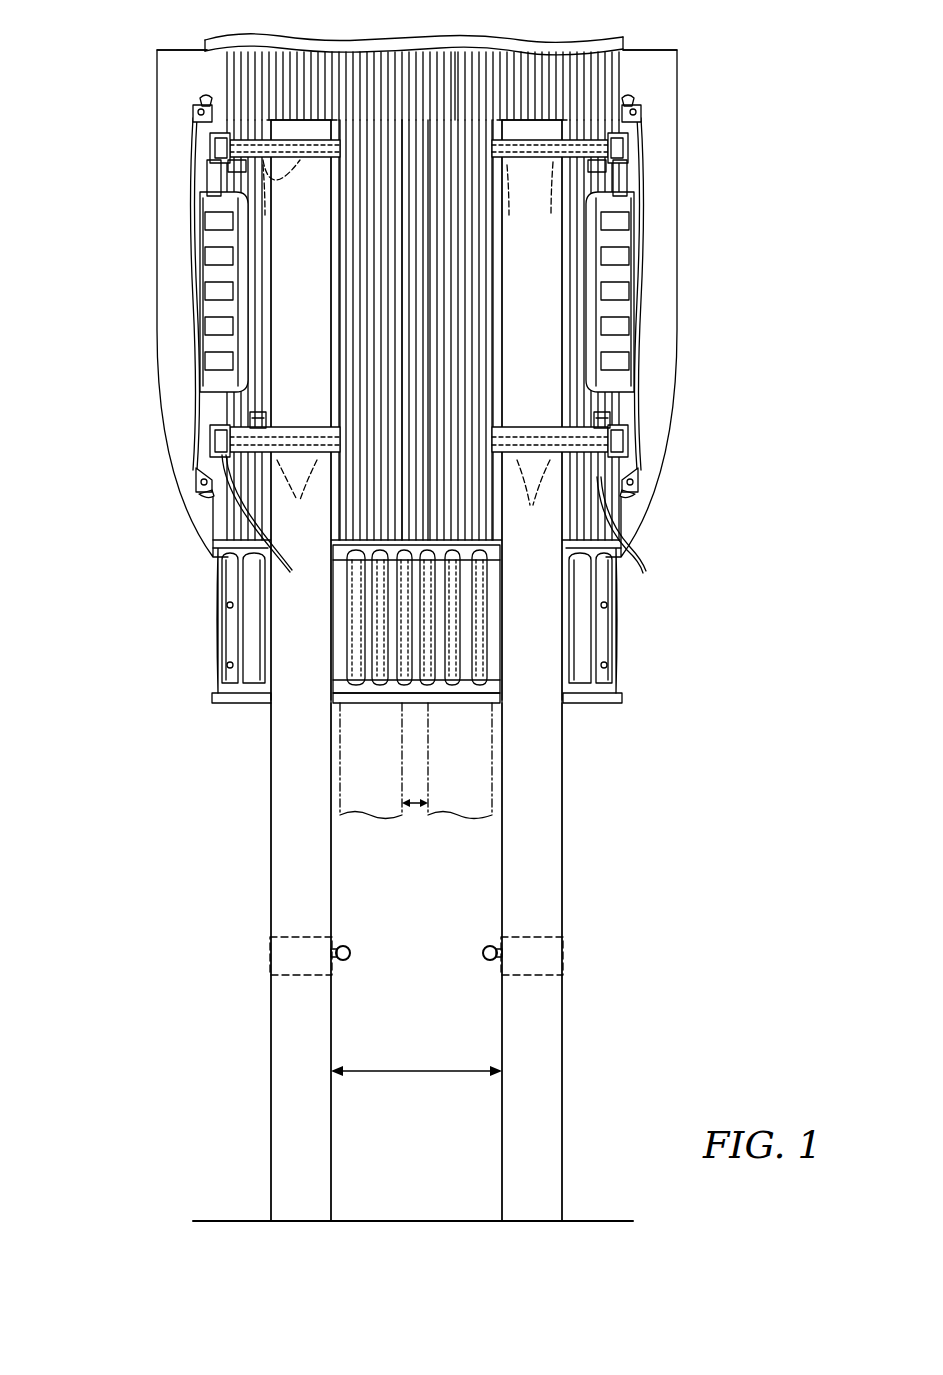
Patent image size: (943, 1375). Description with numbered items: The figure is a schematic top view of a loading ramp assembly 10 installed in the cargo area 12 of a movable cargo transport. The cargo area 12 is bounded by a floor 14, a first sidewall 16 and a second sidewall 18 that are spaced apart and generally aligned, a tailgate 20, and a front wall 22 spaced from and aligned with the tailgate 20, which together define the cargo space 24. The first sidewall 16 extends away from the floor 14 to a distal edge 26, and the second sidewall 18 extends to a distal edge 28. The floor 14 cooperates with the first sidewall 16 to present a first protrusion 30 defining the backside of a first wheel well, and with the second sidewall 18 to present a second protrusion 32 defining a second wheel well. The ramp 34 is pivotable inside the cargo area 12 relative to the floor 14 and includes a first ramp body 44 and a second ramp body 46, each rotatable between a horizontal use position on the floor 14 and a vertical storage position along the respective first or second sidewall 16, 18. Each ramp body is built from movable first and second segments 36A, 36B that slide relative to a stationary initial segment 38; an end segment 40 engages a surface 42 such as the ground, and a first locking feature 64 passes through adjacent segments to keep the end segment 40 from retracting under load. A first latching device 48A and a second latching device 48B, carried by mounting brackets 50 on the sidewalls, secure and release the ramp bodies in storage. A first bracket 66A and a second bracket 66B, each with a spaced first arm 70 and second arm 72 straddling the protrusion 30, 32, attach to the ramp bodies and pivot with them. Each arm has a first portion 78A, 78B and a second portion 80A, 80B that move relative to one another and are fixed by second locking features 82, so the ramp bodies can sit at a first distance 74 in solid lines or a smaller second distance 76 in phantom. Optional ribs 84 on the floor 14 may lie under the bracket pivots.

The loading ramp assembly 10 is at (716, 82).
The cargo area 12 is at (213, 567).
The floor 14 is at (615, 500).
The first sidewall 16 is at (170, 88).
The second sidewall 18 is at (663, 262).
The tailgate 20 is at (553, 683).
The front wall 22 is at (507, 42).
The cargo space 24 is at (390, 90).
The distal edge 26 is at (163, 252).
The distal edge 28 is at (663, 338).
The first protrusion 30 is at (215, 345).
The second protrusion 32 is at (617, 307).
The ramp 34 is at (402, 856).
The first segments 36A is at (285, 815).
The second segments 36B is at (548, 815).
The initial segment 38 is at (280, 267).
The end segment 40 is at (283, 1138).
The surface 42 is at (577, 1219).
The first ramp body 44 is at (287, 108).
The second ramp body 46 is at (482, 118).
The first latching device 48A is at (190, 114).
The second latching device 48B is at (643, 113).
The mounting brackets 50 is at (625, 100).
The first locking feature 64 is at (345, 962).
The first bracket 66A is at (168, 30).
The second bracket 66B is at (716, 428).
The first arm 70 is at (212, 185).
The second arm 72 is at (268, 438).
The first distance 74 is at (408, 1069).
The second distance 76 is at (415, 806).
The first portion 78A is at (263, 165).
The first portion 78B is at (507, 165).
The second portion 80A is at (228, 136).
The second portion 80B is at (553, 162).
The second locking features 82 is at (212, 405).
The ribs 84 is at (456, 66).